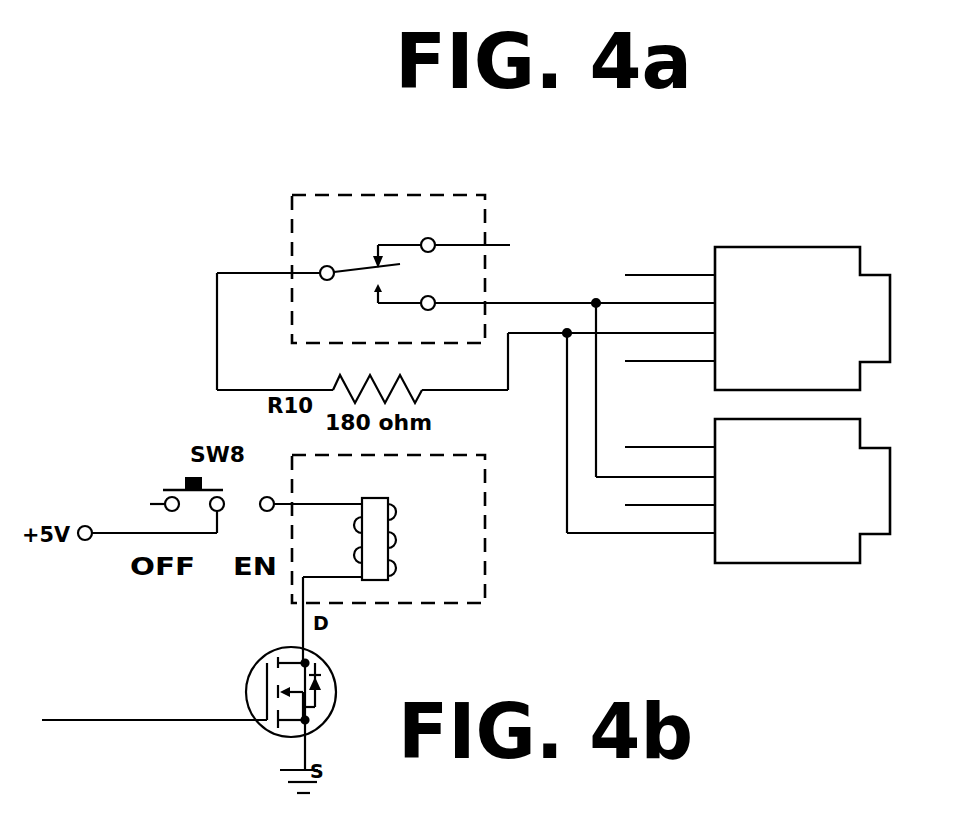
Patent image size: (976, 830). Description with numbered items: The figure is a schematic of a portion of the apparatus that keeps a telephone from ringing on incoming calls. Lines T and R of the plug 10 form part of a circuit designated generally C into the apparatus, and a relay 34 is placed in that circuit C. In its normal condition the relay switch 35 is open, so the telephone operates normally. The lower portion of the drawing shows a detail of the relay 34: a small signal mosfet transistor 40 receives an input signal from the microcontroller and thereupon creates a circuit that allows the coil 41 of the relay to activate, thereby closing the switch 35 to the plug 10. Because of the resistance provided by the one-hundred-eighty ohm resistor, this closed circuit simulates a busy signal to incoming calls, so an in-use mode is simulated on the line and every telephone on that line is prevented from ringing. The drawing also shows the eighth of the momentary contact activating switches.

In FIG. 4a, the relay 34 is at (290, 193).
In FIG. 4b, the relay 34 is at (490, 605).
In FIG. 4a, the relay switch 35 is at (400, 240).
In FIG. 4a, the plug 10 is at (832, 243).
In FIG. 4b, the coil 41 is at (395, 538).
In FIG. 4b, the small signal mosfet transistor 40 is at (332, 665).
In FIG. 4a, the circuit C is at (550, 282).